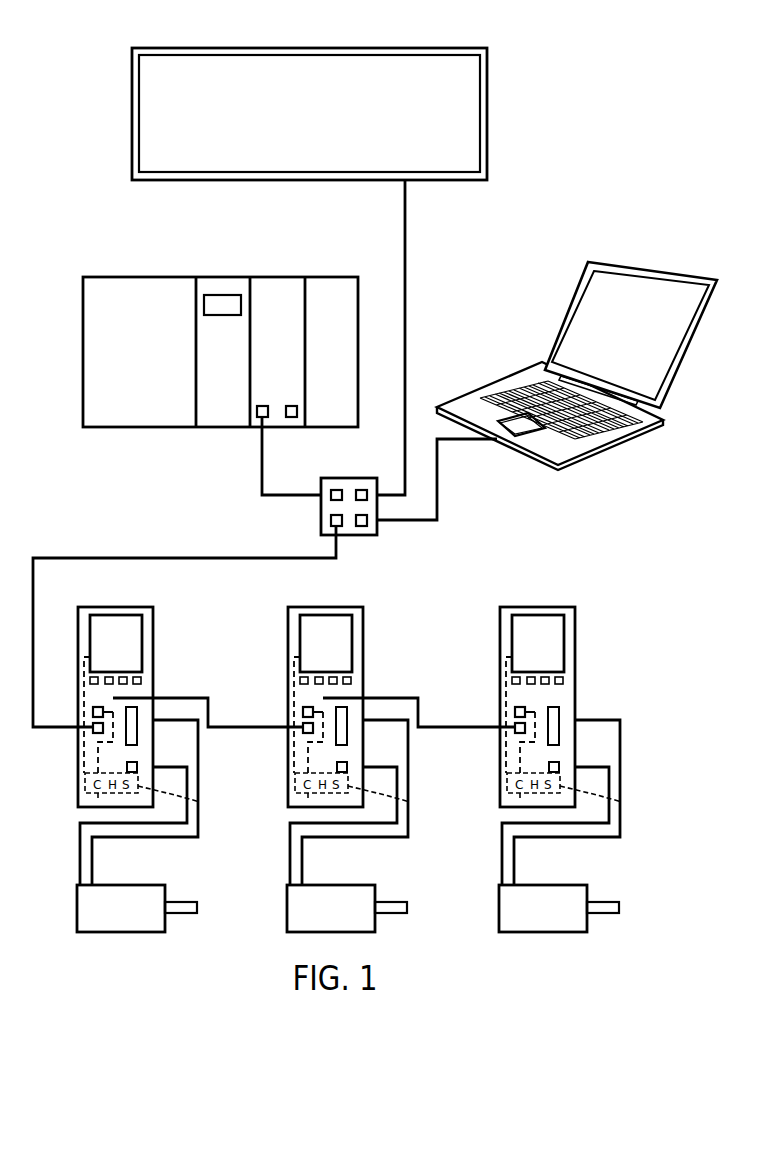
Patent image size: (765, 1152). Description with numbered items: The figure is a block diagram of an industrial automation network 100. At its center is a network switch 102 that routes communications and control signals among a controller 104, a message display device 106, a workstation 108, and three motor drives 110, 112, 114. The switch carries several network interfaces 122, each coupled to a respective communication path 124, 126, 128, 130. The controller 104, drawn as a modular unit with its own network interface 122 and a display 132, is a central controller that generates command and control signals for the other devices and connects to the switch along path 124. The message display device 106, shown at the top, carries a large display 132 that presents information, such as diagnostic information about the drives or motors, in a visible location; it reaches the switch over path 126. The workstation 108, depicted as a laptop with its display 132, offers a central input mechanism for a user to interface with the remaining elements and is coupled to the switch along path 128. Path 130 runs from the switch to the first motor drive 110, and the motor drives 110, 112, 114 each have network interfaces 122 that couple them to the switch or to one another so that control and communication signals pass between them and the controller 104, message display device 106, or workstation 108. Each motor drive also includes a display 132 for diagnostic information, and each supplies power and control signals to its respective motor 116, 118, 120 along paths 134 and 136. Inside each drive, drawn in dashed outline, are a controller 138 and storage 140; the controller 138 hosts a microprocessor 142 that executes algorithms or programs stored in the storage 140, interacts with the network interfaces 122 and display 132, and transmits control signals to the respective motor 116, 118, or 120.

The industrial automation network 100 is at (589, 54).
The network switch 102 is at (321, 512).
The controller 104 is at (330, 277).
The message display device 106 is at (311, 48).
The workstation 108 is at (653, 270).
The motor drive 110 is at (136, 607).
The motor drive 112 is at (327, 607).
The motor drive 114 is at (539, 607).
The motor 116 is at (121, 885).
The motor 118 is at (331, 885).
The motor 120 is at (543, 885).
The network interface 122 is at (262, 406).
The communication path 124 is at (262, 470).
The communication path 126 is at (406, 300).
The communication path 128 is at (438, 506).
The communication path 130 is at (185, 556).
The display 132 is at (473, 86).
The path 134 is at (173, 767).
The path 136 is at (198, 776).
The controller 138 is at (85, 792).
The storage 140 is at (201, 803).
The microprocessor 142 is at (100, 803).